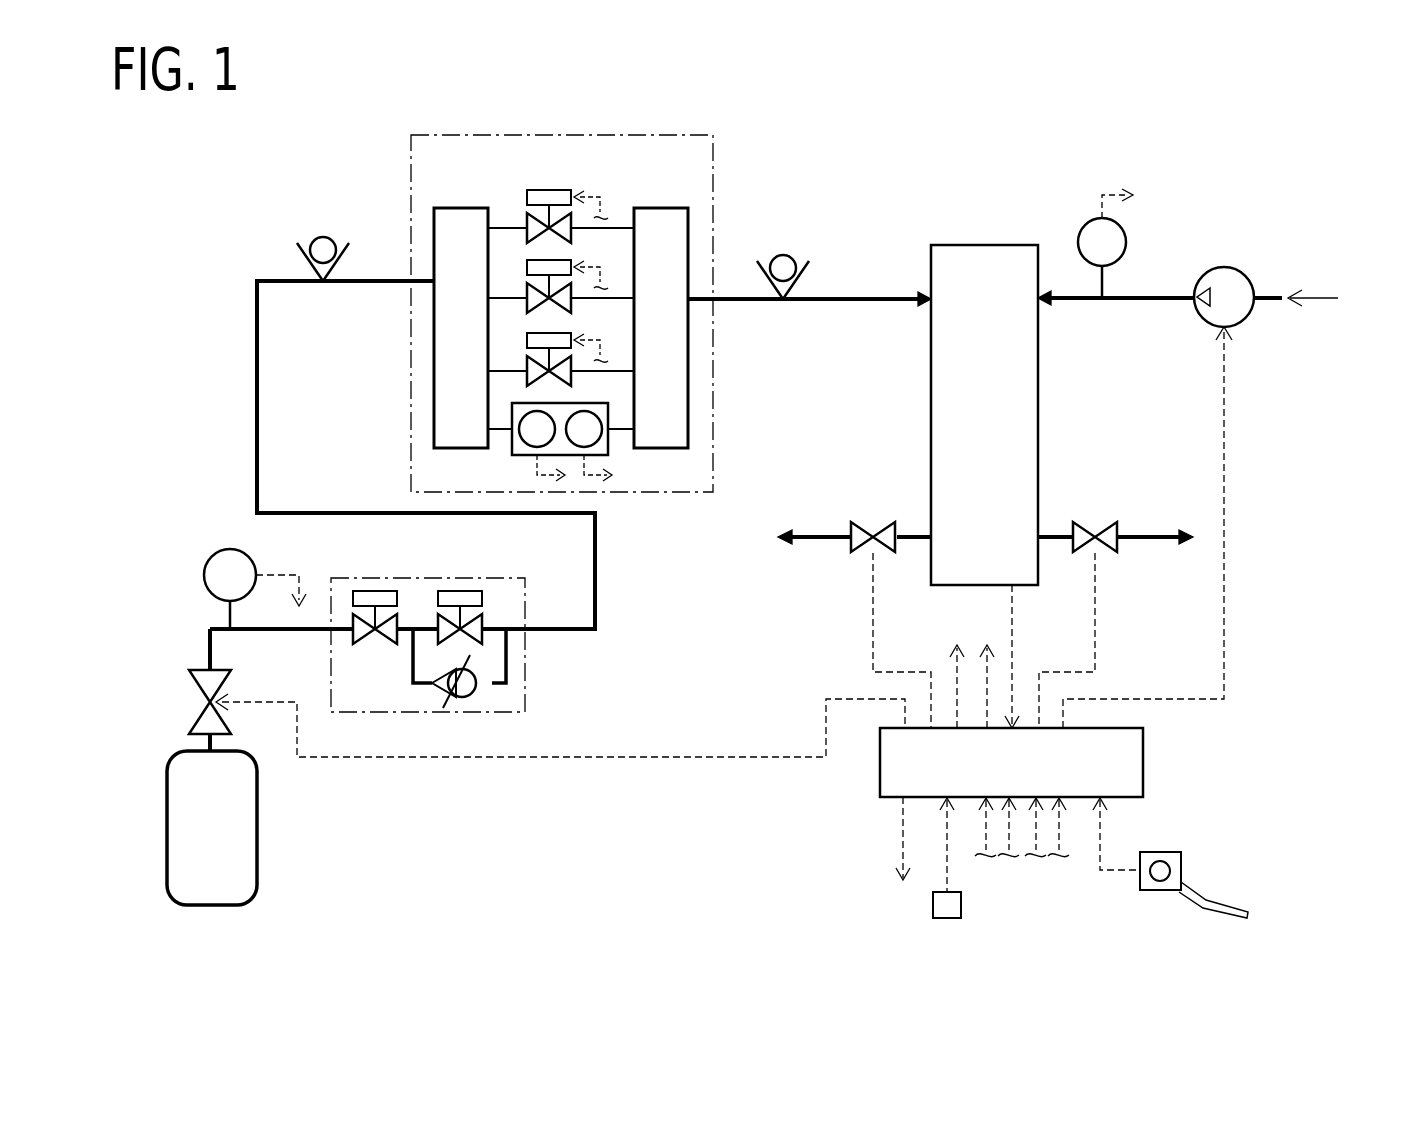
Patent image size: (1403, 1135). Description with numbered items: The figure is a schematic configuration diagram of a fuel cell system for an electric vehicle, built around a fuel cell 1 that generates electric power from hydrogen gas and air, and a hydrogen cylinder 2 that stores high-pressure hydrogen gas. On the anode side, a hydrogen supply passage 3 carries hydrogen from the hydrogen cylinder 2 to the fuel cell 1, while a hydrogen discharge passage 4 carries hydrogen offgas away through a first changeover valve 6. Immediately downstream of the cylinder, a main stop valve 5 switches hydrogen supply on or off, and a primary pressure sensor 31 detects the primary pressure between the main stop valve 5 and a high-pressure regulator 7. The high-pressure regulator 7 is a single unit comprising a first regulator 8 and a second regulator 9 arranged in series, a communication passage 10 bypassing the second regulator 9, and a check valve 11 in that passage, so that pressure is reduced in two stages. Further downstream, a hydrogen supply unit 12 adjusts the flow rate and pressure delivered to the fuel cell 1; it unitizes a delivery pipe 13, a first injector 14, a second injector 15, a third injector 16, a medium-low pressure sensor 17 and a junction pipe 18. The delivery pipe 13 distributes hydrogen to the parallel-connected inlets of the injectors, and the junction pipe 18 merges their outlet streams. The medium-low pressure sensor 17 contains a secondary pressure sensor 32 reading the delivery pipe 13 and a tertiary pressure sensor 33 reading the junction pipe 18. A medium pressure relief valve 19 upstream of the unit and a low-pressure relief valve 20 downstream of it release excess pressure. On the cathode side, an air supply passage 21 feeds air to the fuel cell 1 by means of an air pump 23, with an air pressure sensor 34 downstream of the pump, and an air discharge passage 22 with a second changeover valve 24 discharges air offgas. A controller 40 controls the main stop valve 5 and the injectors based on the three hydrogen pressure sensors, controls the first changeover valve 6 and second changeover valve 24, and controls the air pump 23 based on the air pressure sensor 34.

The fuel cell 1 is at (988, 245).
The hydrogen cylinder 2 is at (258, 838).
The hydrogen supply passage 3 is at (893, 296).
The hydrogen discharge passage 4 is at (814, 542).
The main stop valve 5 is at (192, 722).
The first changeover valve 6 is at (882, 526).
The high-pressure regulator 7 is at (504, 718).
The first regulator 8 is at (378, 592).
The second regulator 9 is at (460, 592).
The communication passage 10 is at (413, 663).
The check valve 11 is at (443, 710).
The hydrogen supply unit 12 is at (410, 160).
The delivery pipe 13 is at (462, 208).
The first injector 14 is at (548, 190).
The second injector 15 is at (570, 268).
The third injector 16 is at (562, 342).
The medium-low pressure sensor 17 is at (561, 429).
The junction pipe 18 is at (652, 208).
The medium pressure relief valve 19 is at (302, 265).
The low-pressure relief valve 20 is at (804, 276).
The air supply passage 21 is at (1150, 296).
The air discharge passage 22 is at (1156, 535).
The air pump 23 is at (1220, 282).
The second changeover valve 24 is at (1098, 526).
The primary pressure sensor 31 is at (206, 578).
The secondary pressure sensor 32 is at (520, 457).
The tertiary pressure sensor 33 is at (606, 457).
The air pressure sensor 34 is at (1081, 232).
The controller 40 is at (1143, 762).